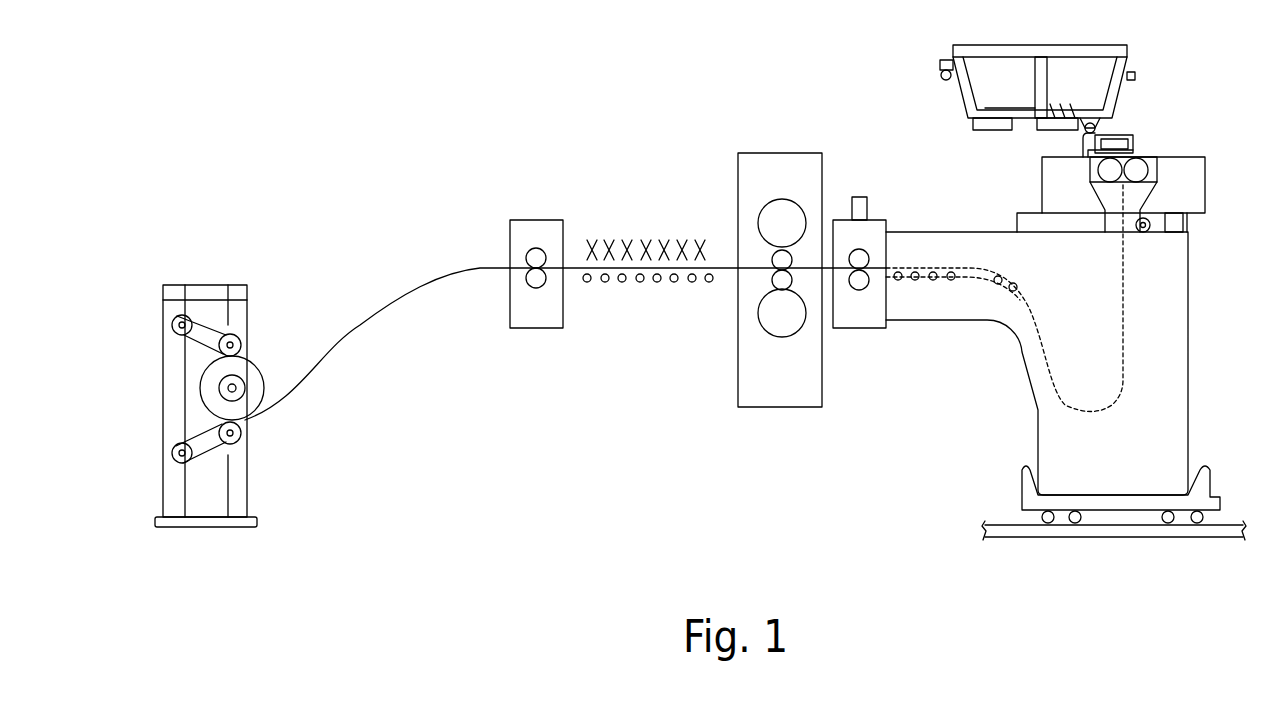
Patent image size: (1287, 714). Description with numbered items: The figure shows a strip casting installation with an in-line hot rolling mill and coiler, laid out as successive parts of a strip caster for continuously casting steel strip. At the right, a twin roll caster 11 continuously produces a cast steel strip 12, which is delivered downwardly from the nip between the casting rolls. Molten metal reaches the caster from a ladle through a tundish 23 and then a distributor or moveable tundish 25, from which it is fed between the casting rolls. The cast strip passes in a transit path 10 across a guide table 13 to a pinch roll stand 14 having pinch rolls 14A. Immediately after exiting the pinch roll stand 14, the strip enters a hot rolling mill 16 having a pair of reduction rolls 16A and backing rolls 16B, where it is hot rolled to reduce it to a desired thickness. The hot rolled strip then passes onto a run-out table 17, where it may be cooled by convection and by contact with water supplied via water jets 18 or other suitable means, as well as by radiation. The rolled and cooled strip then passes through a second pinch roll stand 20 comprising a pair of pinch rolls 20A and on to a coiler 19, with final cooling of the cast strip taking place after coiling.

The transit path 10 is at (1126, 298).
The twin roll caster 11 is at (1165, 170).
The cast steel strip 12 is at (1124, 276).
The guide table 13 is at (925, 283).
The pinch roll stand 14 is at (880, 228).
The pinch rolls 14A is at (858, 286).
The hot rolling mill 16 is at (805, 208).
The reduction rolls 16A is at (771, 281).
The backing rolls 16B is at (790, 328).
The run-out table 17 is at (673, 283).
The water jets 18 is at (681, 239).
The coiler 19 is at (286, 462).
The pinch roll stand 20 is at (543, 225).
The pinch rolls 20A is at (530, 258).
The tundish 23 is at (950, 100).
The distributor or moveable tundish 25 is at (1140, 140).